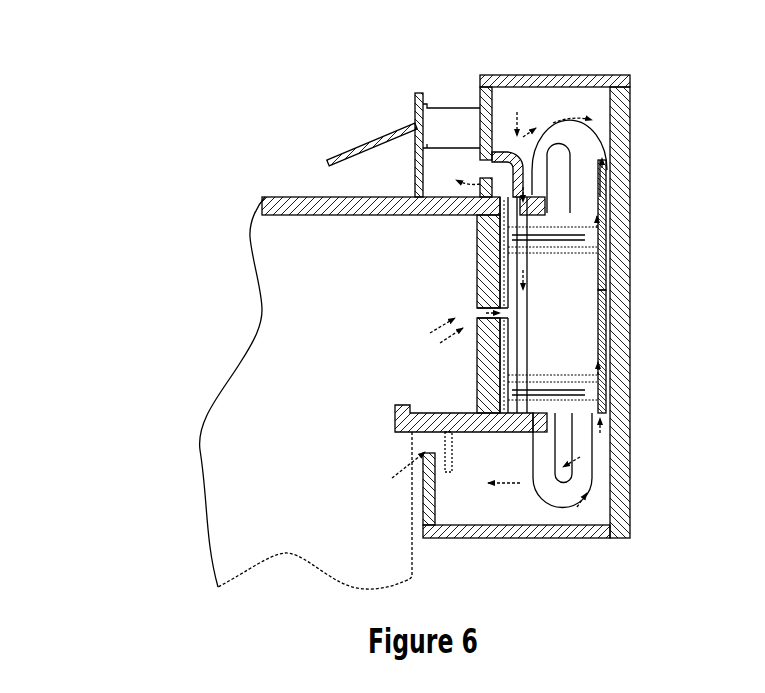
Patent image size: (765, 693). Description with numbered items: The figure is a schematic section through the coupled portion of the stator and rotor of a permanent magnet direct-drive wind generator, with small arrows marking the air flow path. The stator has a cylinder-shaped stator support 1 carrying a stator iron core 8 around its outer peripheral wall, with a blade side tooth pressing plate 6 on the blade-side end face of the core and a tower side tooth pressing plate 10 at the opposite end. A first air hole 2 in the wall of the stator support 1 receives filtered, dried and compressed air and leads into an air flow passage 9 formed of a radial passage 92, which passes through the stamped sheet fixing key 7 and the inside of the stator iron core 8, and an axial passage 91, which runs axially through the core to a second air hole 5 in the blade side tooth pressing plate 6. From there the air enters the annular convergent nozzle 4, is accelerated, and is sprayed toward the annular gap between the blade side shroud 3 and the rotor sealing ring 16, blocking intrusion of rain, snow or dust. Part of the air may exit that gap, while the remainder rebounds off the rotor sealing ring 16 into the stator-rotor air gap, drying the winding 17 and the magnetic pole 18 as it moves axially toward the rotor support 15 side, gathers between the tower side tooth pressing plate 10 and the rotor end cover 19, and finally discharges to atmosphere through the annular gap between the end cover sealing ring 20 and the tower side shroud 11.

The stator support 1 is at (267, 197).
The first air hole 2 is at (477, 308).
The blade side shroud 3 is at (488, 85).
The convergent nozzle 4 is at (517, 110).
The second air hole 5 is at (518, 180).
The blade side tooth pressing plate 6 is at (538, 200).
The stamped sheet fixing key 7 is at (485, 386).
The stator iron core 8 is at (598, 222).
The air flow passage 9 is at (542, 323).
The axial passage 91 is at (525, 270).
The radial passage 92 is at (500, 316).
The tower side tooth pressing plate 10 is at (535, 428).
The tower side shroud 11 is at (445, 470).
The rotor support 15 is at (358, 147).
The rotor sealing ring 16 is at (480, 155).
The winding 17 is at (585, 165).
The magnetic pole 18 is at (603, 343).
The rotor end cover 19 is at (630, 537).
The end cover sealing ring 20 is at (428, 470).